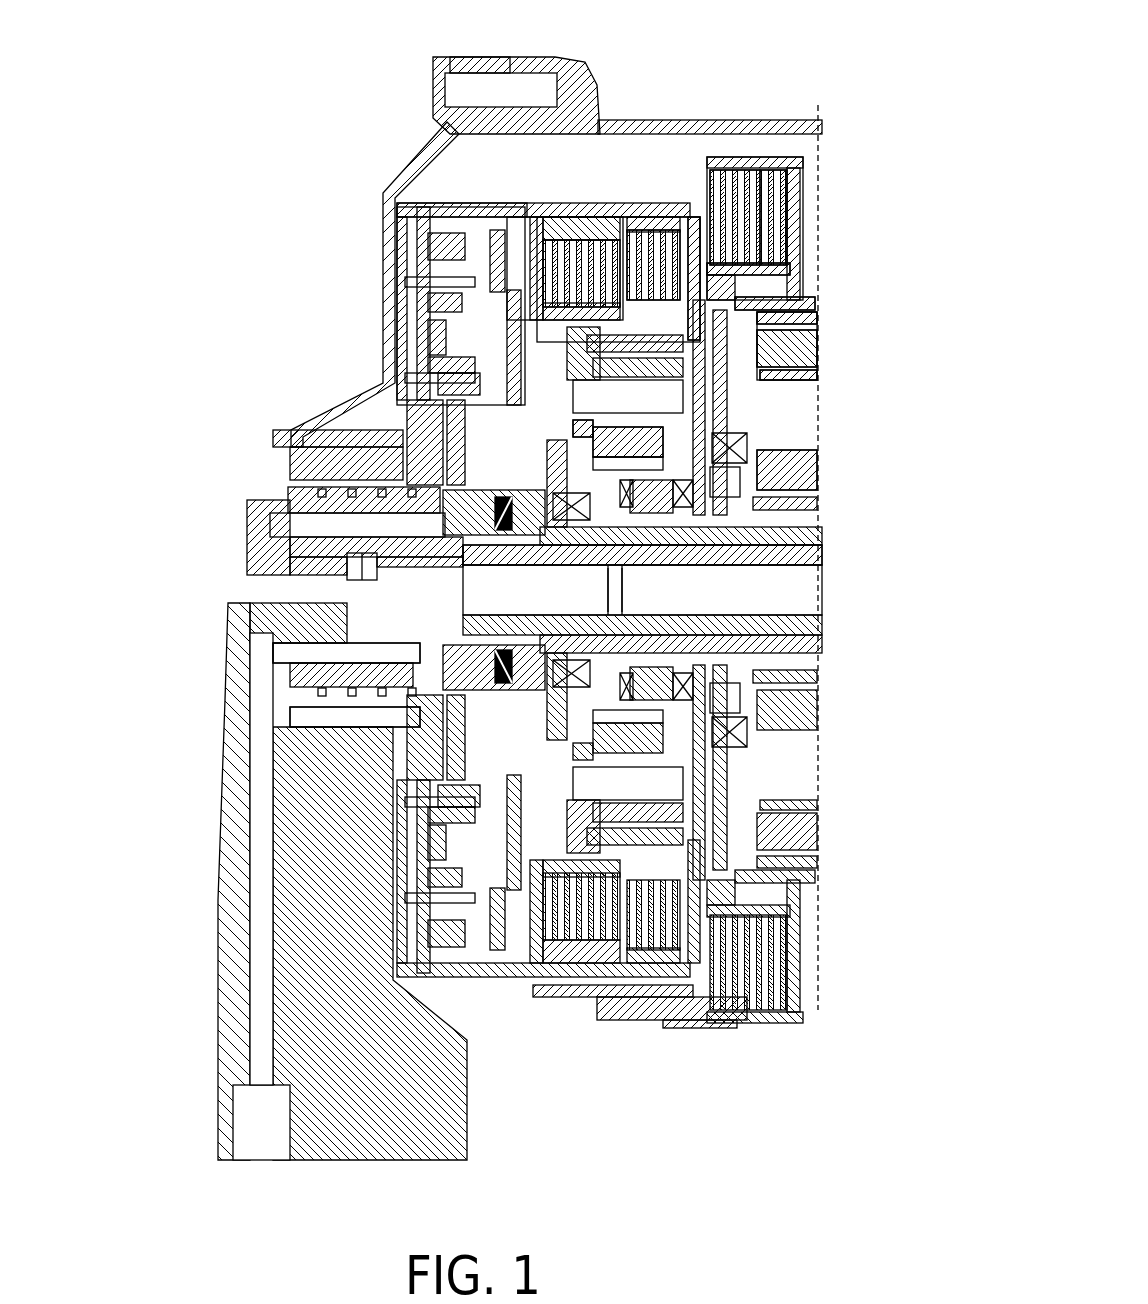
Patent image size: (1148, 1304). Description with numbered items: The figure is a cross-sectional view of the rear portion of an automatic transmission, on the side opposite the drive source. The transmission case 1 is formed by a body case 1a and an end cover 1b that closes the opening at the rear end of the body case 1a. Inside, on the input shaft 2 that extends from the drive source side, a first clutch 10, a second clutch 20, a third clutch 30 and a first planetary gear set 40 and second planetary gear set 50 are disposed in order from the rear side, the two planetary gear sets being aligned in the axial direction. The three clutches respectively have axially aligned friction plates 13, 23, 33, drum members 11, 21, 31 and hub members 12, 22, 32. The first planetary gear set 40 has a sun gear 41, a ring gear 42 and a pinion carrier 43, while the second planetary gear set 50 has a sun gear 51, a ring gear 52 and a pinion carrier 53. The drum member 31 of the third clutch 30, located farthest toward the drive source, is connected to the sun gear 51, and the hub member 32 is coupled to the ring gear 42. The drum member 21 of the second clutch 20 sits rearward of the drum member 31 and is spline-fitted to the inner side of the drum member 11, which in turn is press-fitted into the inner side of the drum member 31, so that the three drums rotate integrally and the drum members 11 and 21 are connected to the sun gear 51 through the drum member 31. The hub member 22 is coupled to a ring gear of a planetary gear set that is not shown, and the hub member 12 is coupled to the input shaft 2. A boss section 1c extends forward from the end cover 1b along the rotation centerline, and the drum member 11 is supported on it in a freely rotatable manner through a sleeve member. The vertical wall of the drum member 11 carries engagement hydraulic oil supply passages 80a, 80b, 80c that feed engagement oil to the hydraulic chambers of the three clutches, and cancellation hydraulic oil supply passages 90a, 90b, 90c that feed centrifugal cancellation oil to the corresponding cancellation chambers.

The transmission case 1 is at (700, 118).
The body case 1a is at (577, 103).
The end cover 1b is at (427, 153).
The boss section 1c is at (313, 567).
The input shaft 2 is at (825, 553).
The first clutch 10 is at (536, 202).
The drum member 11 is at (520, 204).
The hub member 12 is at (470, 330).
The friction plates 13 is at (540, 210).
The second clutch 20 is at (586, 202).
The drum member 21 is at (640, 218).
The hub member 22 is at (760, 300).
The friction plates 23 is at (672, 218).
The third clutch 30 is at (828, 157).
The drum member 31 is at (778, 157).
The hub member 32 is at (782, 273).
The friction plates 33 is at (745, 160).
The first planetary gear set 40 is at (590, 566).
The sun gear 41 is at (593, 428).
The ring gear 42 is at (775, 380).
The pinion carrier 43 is at (660, 428).
The second planetary gear set 50 is at (828, 350).
The sun gear 51 is at (822, 490).
The ring gear 52 is at (818, 316).
The pinion carrier 53 is at (818, 344).
The engagement hydraulic oil supply passage 80a is at (297, 655).
The engagement hydraulic oil supply passage 80b is at (302, 652).
The engagement hydraulic oil supply passage 80c is at (302, 654).
The cancellation hydraulic oil supply passage 90a is at (340, 515).
The cancellation hydraulic oil supply passage 90b is at (340, 520).
The cancellation hydraulic oil supply passage 90c is at (340, 525).